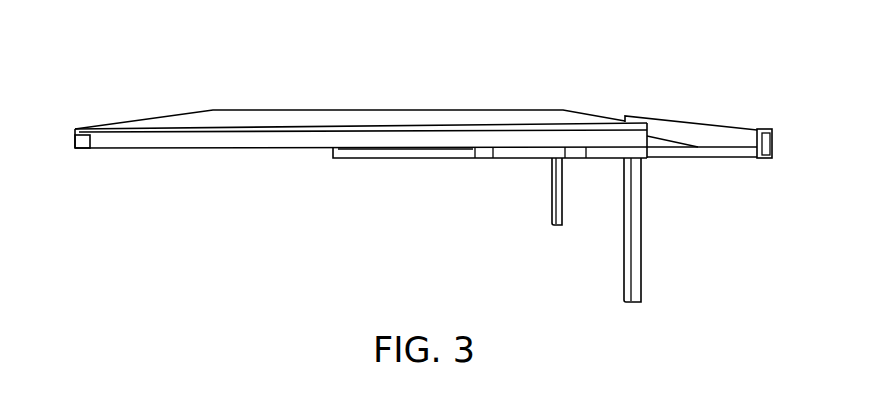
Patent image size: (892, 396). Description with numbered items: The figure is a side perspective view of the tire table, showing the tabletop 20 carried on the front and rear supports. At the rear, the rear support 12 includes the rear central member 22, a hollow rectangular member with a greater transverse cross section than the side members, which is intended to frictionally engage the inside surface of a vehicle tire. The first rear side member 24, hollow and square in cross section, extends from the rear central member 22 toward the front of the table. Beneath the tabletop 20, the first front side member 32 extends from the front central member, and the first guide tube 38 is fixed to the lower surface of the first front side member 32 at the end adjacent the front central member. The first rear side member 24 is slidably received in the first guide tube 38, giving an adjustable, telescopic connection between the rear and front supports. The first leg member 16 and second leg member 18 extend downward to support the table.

The tabletop 20 is at (379, 118).
The first front side member 32 is at (224, 139).
The rear support 12 is at (677, 118).
The rear central member 22 is at (722, 138).
The first rear side member 24 is at (388, 152).
The second leg member 18 is at (553, 186).
The first guide tube 38 is at (600, 152).
The first leg member 16 is at (636, 222).